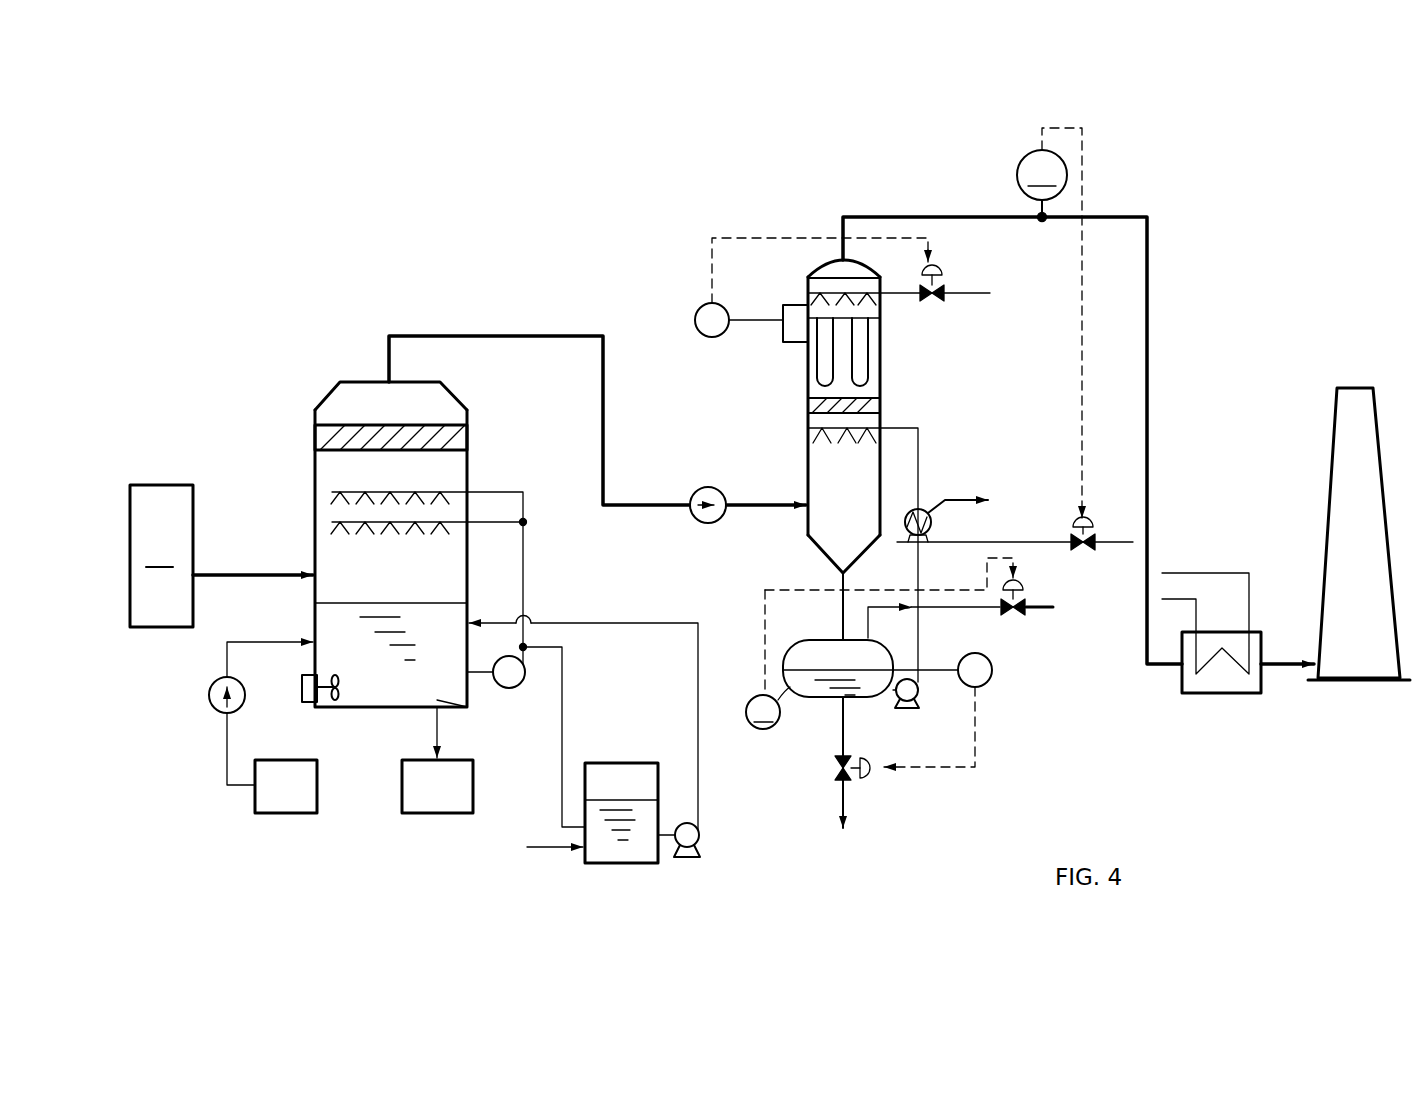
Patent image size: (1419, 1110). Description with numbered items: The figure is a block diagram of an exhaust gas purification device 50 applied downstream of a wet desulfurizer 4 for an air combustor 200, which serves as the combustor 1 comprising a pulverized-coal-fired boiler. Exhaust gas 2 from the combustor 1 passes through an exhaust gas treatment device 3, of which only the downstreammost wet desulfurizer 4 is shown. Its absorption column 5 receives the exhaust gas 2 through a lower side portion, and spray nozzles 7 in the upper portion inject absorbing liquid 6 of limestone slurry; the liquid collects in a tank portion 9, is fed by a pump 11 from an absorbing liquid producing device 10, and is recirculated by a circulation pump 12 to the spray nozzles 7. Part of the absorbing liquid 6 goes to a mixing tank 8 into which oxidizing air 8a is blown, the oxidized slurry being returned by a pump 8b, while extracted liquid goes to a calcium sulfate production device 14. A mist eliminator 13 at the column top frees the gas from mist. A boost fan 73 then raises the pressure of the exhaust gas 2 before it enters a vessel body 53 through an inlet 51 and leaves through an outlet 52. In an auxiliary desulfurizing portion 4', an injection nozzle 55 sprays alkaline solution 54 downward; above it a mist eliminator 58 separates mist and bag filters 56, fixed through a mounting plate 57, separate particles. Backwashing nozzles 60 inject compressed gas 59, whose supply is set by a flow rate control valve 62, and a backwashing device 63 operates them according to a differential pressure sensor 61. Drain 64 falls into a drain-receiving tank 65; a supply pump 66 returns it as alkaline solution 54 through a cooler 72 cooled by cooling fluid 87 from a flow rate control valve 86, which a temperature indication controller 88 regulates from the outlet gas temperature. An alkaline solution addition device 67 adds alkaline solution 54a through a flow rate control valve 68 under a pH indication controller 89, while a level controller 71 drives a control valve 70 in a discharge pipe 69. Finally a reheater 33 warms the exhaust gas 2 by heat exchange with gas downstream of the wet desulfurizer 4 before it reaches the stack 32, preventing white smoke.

The air combustor 200 is at (150, 478).
The combustor 1 is at (159, 553).
The exhaust gas 2 is at (242, 572).
The exhaust gas treatment device 3 is at (351, 360).
The wet desulfurizer 4 is at (364, 498).
The absorption column 5 is at (313, 468).
The absorbing liquid 6 is at (255, 640).
The spray nozzles 7 is at (355, 490).
The mixing tank 8 is at (618, 865).
The oxidizing air 8a is at (537, 850).
The pump 8b is at (700, 852).
The tank portion 9 is at (468, 700).
The absorbing liquid producing device 10 is at (283, 815).
The pump 11 is at (212, 712).
The circulation pump 12 is at (515, 688).
The mist eliminator 13 is at (453, 440).
The calcium sulfate production device 14 is at (437, 815).
The stack 32 is at (1355, 388).
The reheater 33 is at (1222, 695).
The auxiliary desulfurizing portion 4' is at (765, 462).
The exhaust gas purification device 50 is at (745, 205).
The inlet 51 is at (810, 510).
The outlet 52 is at (838, 258).
The vessel body 53 is at (922, 395).
The alkaline solution 54 is at (850, 447).
The alkaline solution 54a is at (948, 610).
The injection nozzle 55 is at (860, 428).
The bag filters 56 is at (862, 368).
The mounting plate 57 is at (877, 330).
The mist eliminator 58 is at (808, 405).
The compressed gas 59 is at (975, 292).
The backwashing nozzles 60 is at (825, 295).
The differential pressure sensor 61 is at (700, 308).
The flow rate control valve 62 is at (940, 268).
The backwashing device 63 is at (960, 309).
The drain 64 is at (870, 698).
The drain-receiving tank 65 is at (800, 648).
The supply pump 66 is at (920, 705).
The alkaline solution addition device 67 is at (1094, 621).
The flow rate control valve 68 is at (1018, 620).
The discharge pipe 69 is at (840, 745).
The control valve 70 is at (872, 780).
The level controller 71 is at (993, 670).
The cooler 72 is at (940, 502).
The boost fan 73 is at (700, 488).
The flow rate control valve 86 is at (1090, 520).
The cooling fluid 87 is at (1087, 562).
The temperature indication controller 88 is at (1022, 165).
The pH indication controller 89 is at (757, 697).